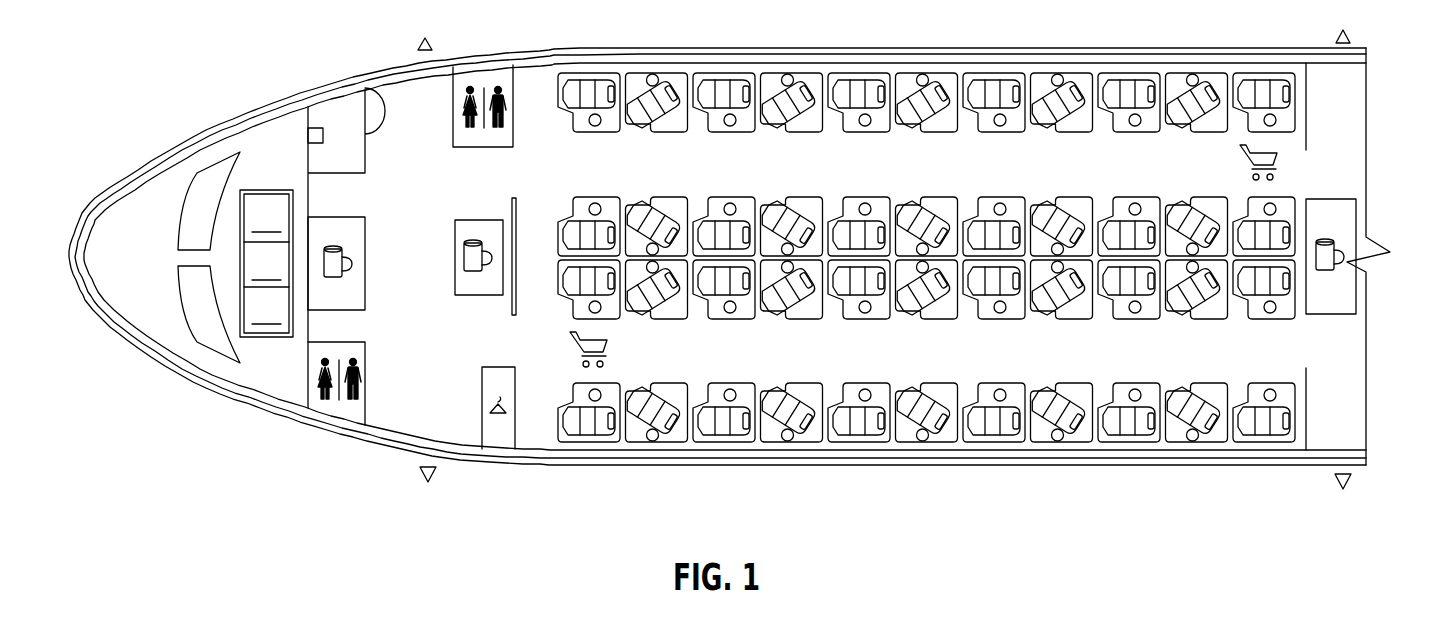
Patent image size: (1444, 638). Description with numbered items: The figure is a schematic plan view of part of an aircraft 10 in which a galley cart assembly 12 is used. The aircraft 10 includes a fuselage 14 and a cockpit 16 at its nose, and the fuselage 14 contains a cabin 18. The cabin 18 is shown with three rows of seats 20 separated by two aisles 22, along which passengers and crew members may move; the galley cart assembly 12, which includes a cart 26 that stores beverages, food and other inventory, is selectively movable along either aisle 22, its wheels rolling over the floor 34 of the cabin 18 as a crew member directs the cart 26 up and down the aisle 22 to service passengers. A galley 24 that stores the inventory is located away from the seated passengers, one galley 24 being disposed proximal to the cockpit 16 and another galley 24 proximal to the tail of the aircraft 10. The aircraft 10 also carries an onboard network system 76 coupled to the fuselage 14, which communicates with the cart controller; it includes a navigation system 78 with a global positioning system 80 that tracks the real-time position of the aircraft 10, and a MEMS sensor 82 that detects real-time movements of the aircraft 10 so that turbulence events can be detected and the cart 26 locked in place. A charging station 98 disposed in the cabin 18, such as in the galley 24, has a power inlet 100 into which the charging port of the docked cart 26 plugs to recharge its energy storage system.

The aircraft 10 is at (142, 106).
The galley cart assembly 12 is at (923, 256).
The fuselage 14 is at (327, 441).
The cockpit 16 is at (153, 332).
The cabin 18 is at (1367, 455).
The seats 20 is at (720, 78).
The aisle 22 is at (563, 155).
The galley 24 is at (427, 100).
The cart 26 is at (610, 341).
The floor 34 is at (1079, 366).
The onboard network system 76 is at (246, 198).
The navigation system 78 is at (266, 222).
The global positioning system 80 is at (266, 268).
The MEMS sensor 82 is at (266, 310).
The charging station 98 is at (325, 215).
The power inlet 100 is at (315, 130).